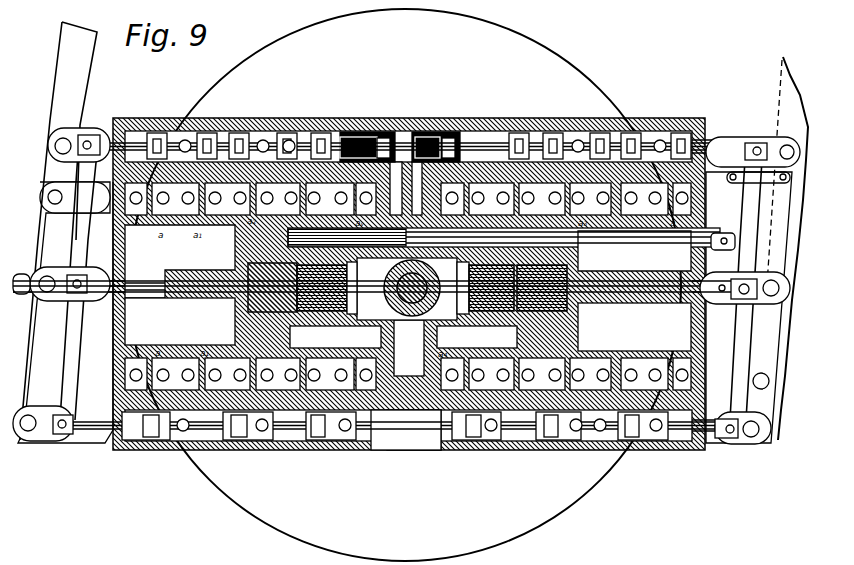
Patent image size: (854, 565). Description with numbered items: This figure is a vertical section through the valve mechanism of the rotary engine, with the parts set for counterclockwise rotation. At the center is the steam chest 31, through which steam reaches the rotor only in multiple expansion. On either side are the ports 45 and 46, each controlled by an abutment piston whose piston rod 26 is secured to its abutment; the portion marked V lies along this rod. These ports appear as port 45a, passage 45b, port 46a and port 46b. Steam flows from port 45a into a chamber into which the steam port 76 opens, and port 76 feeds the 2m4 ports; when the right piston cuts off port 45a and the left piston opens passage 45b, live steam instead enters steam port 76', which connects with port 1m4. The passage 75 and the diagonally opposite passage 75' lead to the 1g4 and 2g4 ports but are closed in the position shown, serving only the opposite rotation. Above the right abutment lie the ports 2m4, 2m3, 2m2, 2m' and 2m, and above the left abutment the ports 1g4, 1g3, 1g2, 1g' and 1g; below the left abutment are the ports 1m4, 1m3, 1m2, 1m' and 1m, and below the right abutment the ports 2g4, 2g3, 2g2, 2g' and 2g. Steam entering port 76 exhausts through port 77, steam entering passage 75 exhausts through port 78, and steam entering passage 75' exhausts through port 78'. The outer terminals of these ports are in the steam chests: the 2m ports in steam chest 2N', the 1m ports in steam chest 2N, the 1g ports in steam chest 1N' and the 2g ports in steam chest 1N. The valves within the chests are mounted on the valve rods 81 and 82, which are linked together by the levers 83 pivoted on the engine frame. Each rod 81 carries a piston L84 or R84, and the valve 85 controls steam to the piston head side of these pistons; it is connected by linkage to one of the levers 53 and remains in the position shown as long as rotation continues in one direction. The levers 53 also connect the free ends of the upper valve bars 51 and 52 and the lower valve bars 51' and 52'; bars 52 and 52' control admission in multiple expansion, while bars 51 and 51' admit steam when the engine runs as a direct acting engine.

The lever 53 is at (58, 77).
The valve bar 51 is at (424, 124).
The valve rod 81 is at (135, 146).
The port 1g is at (162, 122).
The port 1g' is at (198, 122).
The port 1g2 is at (241, 132).
The port 1g3 is at (320, 132).
The port 1g4 is at (355, 136).
The steam chest 1N' is at (421, 96).
The passage 75 is at (374, 135).
The piston L84 is at (383, 137).
The steam port 76 is at (436, 135).
The piston R84 is at (452, 137).
The port 2m4 is at (501, 133).
The port 2m3 is at (579, 140).
The port 2m2 is at (600, 132).
The port 2m' is at (643, 125).
The port 2m is at (677, 125).
The steam chest 2N' is at (718, 111).
The valve bar 51' is at (407, 286).
The valve bar 52 is at (63, 305).
The valve bar 52' is at (756, 307).
The port 77 is at (133, 204).
The port 78 is at (669, 226).
The port 78' is at (114, 374).
The port 46a is at (250, 262).
The port 45a is at (582, 248).
The passage 45b is at (335, 337).
The port 46b is at (477, 337).
The valve 85 is at (511, 239).
The port 46 is at (302, 288).
The port 45 is at (512, 288).
The steam chest 31 is at (407, 289).
The valve shaft V is at (149, 281).
The piston rod 26 is at (142, 294).
The lever 83 is at (68, 339).
The steam port 76' is at (409, 348).
The passage 75' is at (414, 404).
The port 1m is at (146, 450).
The port 1m' is at (190, 454).
The port 1m2 is at (240, 445).
The port 1m3 is at (300, 445).
The port 1m4 is at (342, 445).
The valve rod 82 is at (395, 448).
The steam chest 1N is at (393, 461).
The port 2g4 is at (490, 445).
The port 2g3 is at (545, 445).
The port 2g2 is at (578, 445).
The port 2g' is at (643, 454).
The port 2g is at (669, 458).
The steam chest 2N is at (508, 474).